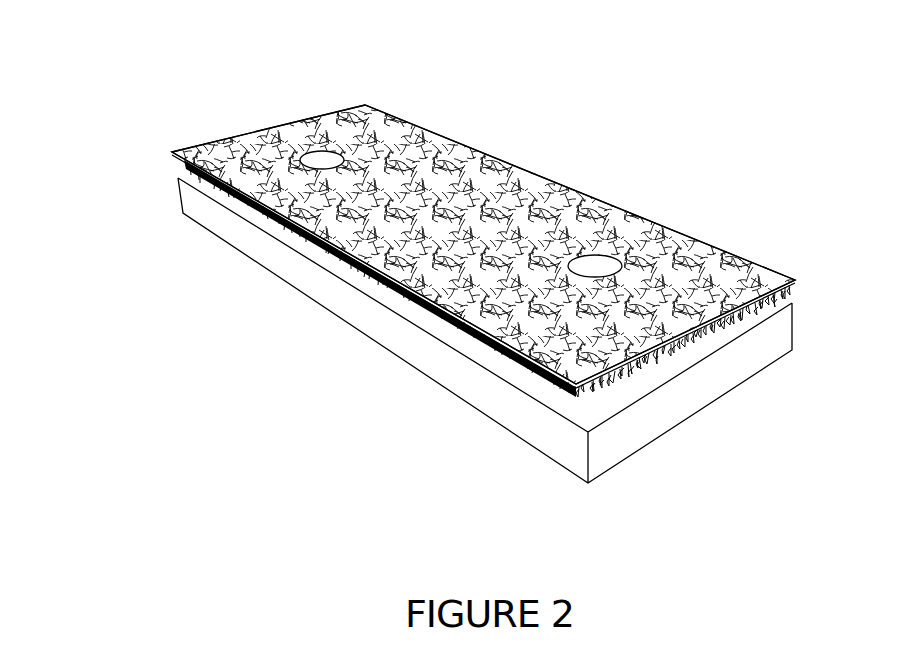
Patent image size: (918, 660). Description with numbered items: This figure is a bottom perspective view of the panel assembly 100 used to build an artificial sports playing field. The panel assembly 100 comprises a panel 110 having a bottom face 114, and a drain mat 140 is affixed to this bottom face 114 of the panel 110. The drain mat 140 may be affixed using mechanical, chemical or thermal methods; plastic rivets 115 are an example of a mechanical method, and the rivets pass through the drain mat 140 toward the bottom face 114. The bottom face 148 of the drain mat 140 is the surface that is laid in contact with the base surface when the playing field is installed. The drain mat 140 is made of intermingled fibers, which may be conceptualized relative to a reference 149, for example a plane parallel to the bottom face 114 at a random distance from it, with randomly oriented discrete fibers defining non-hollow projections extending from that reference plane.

The panel assembly 100 is at (155, 121).
The panel 110 is at (615, 470).
The bottom face 114 is at (502, 362).
The plastic rivets 115 is at (325, 154).
The drain mat 140 is at (667, 254).
The bottom face of the drain mat 148 is at (475, 148).
The reference plane 149 is at (483, 213).